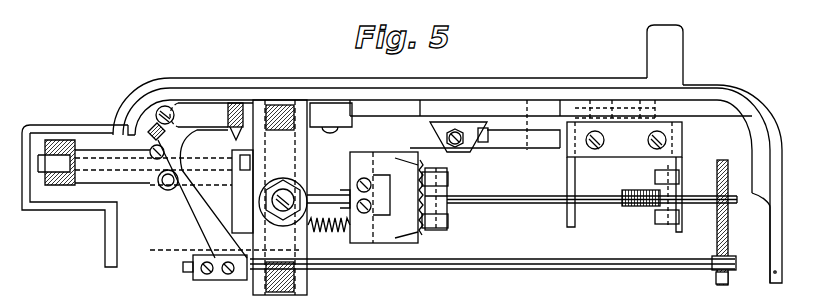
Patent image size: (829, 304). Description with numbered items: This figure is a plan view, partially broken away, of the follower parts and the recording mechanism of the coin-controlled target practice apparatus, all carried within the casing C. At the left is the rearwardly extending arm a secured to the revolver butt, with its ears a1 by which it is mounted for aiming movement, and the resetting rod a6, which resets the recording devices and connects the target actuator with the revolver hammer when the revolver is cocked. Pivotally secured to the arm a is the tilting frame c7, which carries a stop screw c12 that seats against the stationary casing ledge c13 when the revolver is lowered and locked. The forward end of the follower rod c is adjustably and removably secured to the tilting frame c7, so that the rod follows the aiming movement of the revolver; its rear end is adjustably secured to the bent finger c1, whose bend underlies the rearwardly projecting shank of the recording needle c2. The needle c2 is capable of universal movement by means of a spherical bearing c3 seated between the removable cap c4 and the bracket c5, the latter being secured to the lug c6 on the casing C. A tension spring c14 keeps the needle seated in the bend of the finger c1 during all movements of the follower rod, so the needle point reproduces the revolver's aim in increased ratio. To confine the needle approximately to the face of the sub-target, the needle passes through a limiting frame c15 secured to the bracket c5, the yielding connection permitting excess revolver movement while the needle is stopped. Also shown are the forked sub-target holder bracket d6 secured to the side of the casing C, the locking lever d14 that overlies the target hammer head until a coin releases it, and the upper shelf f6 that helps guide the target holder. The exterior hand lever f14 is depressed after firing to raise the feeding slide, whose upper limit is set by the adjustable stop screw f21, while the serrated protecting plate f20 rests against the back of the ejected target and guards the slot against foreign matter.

The casing C is at (270, 86).
The follower rod c is at (604, 268).
The bent finger c1 is at (727, 212).
The recording needle c2 is at (500, 198).
The spherical bearing c3 is at (680, 226).
The removable cap c4 is at (672, 224).
The bracket c5 is at (680, 138).
The lug c6 is at (578, 114).
The tilting frame c7 is at (185, 222).
The stop screw c12 is at (168, 106).
The casing ledge c13 is at (145, 108).
The tension spring c14 is at (650, 206).
The limiting frame c15 is at (568, 215).
The arm a is at (100, 178).
The ears a1 is at (212, 132).
The resetting rod a6 is at (60, 145).
The sub-target holder bracket d6 is at (362, 126).
The locking lever d14 is at (325, 232).
The upper shelf f6 is at (380, 236).
The hand lever f14 is at (668, 50).
The protecting plate f20 is at (430, 222).
The stop screw f21 is at (456, 150).